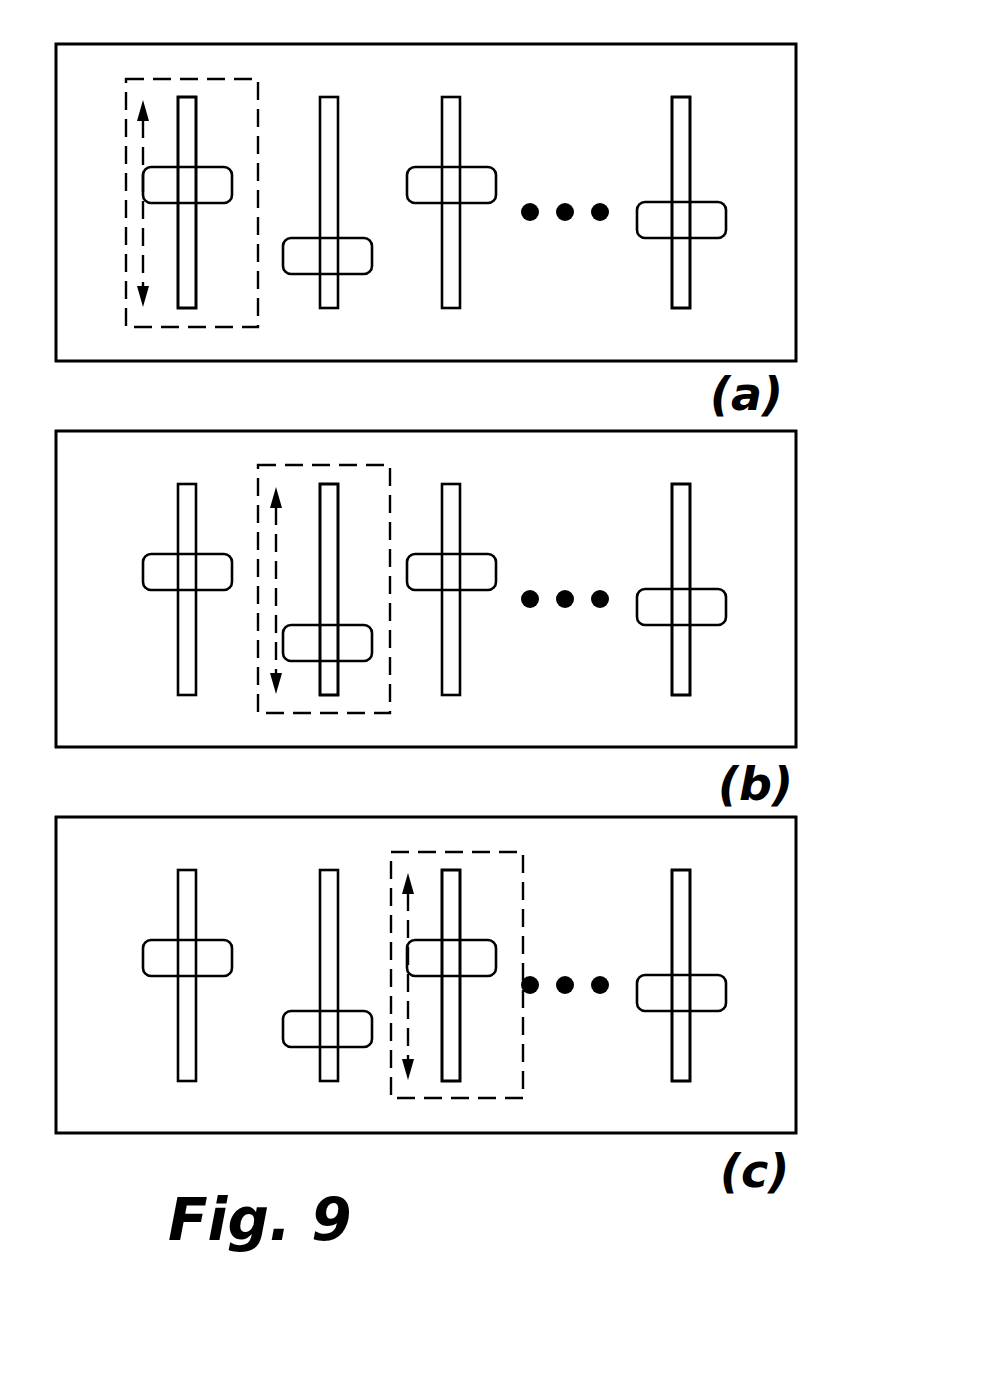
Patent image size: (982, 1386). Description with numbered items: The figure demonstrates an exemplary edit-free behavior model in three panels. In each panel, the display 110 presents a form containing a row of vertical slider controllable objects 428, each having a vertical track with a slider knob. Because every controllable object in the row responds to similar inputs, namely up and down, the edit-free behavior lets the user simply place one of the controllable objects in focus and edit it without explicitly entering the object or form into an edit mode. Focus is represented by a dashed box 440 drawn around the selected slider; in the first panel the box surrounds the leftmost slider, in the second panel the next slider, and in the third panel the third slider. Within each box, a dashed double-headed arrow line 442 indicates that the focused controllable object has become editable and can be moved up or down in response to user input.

The vertical slider controllable objects 428 is at (590, 122).
The display 110 is at (796, 218).
The box 440 is at (232, 327).
The arrow line 442 is at (143, 258).